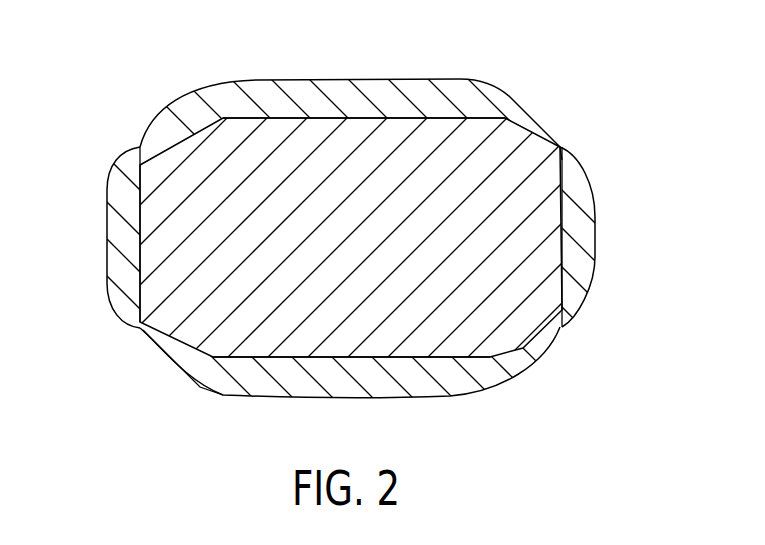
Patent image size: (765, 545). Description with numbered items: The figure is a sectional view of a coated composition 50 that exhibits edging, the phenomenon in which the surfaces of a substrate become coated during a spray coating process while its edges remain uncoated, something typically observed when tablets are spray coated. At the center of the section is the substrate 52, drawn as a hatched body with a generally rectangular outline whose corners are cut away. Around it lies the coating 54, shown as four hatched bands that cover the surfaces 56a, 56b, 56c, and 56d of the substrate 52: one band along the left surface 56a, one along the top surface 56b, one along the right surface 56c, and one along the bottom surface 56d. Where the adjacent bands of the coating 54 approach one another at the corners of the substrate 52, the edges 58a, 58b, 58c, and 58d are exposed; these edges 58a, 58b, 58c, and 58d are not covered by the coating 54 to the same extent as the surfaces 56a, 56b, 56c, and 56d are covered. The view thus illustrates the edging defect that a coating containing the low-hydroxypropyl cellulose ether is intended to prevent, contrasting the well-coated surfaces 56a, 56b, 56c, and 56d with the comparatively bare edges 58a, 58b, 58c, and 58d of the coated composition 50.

The coated composition 50 is at (382, 239).
The substrate 52 is at (365, 249).
The coating 54 is at (417, 88).
The surface 56a is at (140, 205).
The surface 56b is at (323, 117).
The surface 56c is at (563, 287).
The surface 56d is at (410, 359).
The edge 58a is at (141, 149).
The edge 58b is at (559, 147).
The edge 58c is at (558, 330).
The edge 58d is at (141, 328).